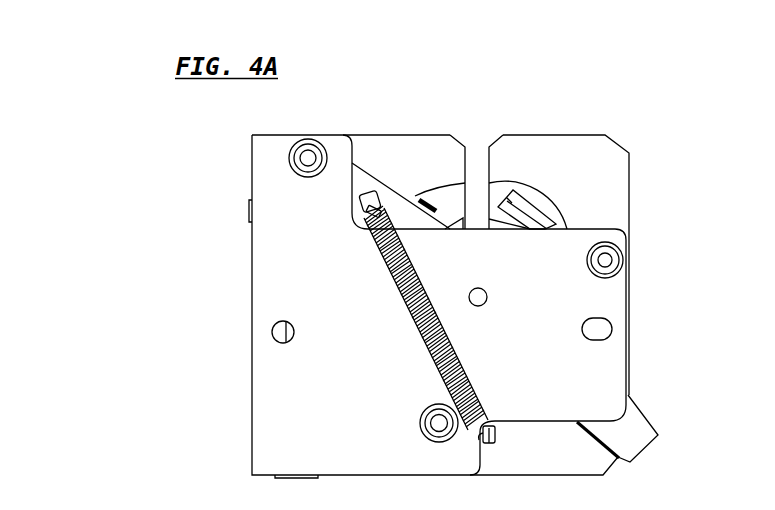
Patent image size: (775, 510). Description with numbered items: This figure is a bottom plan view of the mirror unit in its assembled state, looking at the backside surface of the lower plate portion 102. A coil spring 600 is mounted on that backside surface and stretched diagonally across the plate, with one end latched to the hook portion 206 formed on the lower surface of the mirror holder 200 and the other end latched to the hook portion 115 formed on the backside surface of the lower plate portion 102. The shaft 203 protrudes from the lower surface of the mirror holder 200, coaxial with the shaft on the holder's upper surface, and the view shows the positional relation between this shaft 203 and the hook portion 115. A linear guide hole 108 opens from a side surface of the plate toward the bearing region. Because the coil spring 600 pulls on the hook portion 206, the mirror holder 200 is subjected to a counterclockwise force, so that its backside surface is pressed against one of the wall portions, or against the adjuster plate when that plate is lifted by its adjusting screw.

The lower plate portion 102 is at (603, 147).
The linear guide hole 108 is at (478, 152).
The hook portion 206 is at (368, 193).
The coil spring 600 is at (403, 298).
The hook portion 115 is at (490, 443).
The shaft 203 is at (483, 305).
The mirror holder 200 is at (633, 425).